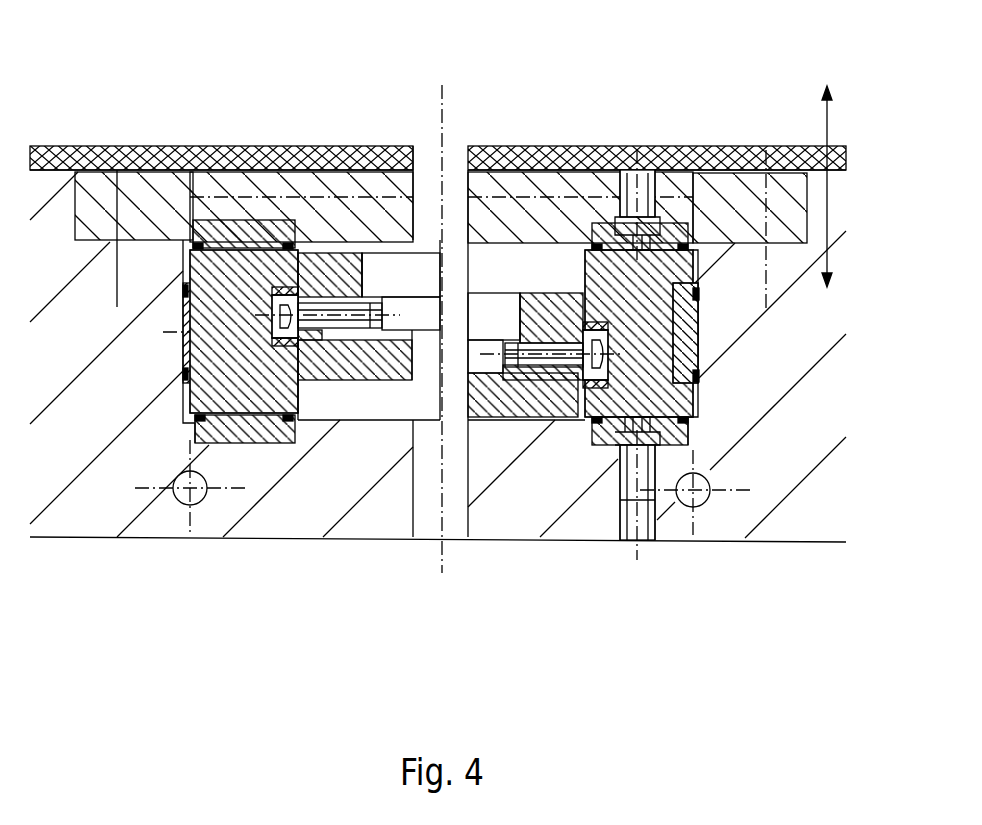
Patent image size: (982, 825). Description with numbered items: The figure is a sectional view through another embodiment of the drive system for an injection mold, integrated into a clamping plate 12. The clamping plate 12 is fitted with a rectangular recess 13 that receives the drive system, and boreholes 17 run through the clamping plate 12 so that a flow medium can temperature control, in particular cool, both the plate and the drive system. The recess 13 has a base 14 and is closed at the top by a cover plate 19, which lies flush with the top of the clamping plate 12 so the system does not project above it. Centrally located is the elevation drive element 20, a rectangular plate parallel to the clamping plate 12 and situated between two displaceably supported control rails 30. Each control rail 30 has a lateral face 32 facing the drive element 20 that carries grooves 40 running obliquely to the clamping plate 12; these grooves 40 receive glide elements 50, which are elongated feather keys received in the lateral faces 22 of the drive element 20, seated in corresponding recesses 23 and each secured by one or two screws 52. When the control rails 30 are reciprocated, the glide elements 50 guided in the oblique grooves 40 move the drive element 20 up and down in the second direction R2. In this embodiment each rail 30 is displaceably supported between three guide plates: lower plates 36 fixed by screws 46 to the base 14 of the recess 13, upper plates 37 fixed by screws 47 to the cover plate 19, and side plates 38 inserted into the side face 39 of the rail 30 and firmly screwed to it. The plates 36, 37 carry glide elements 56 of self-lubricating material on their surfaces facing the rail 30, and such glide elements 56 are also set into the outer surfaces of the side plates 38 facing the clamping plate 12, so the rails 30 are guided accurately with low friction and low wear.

The clamping plate 12 is at (55, 518).
The rectangular recess 13 is at (456, 255).
The base 14 is at (395, 425).
The boreholes 17 is at (196, 497).
The cover plate 19 is at (103, 193).
The elevation drive element 20 is at (350, 263).
The lateral faces 22 is at (292, 262).
The recesses 23 is at (322, 283).
The control rails 30 is at (622, 263).
The lateral faces 32 is at (585, 275).
The guide plates 36 is at (262, 395).
The upper plates 37 is at (210, 202).
The side plates 38 is at (177, 380).
The side face 39 is at (200, 420).
The grooves 40 is at (325, 345).
The screws 46 is at (627, 463).
The screws 47 is at (648, 222).
The glide elements 50 is at (268, 287).
The screws 52 is at (208, 225).
The glide elements 56 is at (287, 247).
The second direction R2 is at (829, 132).